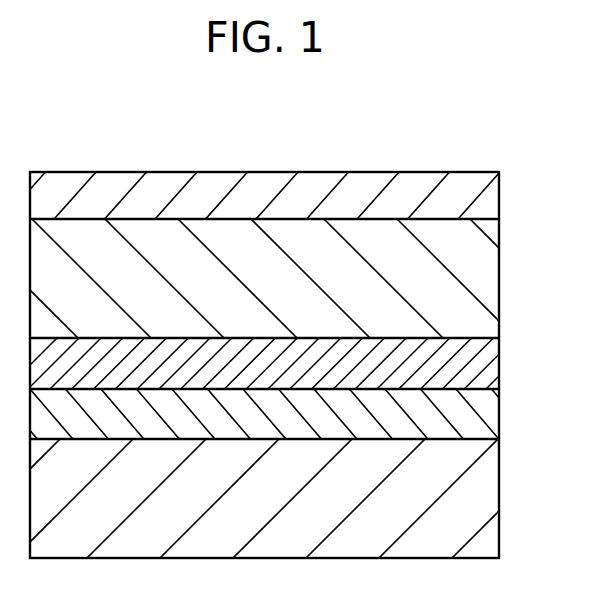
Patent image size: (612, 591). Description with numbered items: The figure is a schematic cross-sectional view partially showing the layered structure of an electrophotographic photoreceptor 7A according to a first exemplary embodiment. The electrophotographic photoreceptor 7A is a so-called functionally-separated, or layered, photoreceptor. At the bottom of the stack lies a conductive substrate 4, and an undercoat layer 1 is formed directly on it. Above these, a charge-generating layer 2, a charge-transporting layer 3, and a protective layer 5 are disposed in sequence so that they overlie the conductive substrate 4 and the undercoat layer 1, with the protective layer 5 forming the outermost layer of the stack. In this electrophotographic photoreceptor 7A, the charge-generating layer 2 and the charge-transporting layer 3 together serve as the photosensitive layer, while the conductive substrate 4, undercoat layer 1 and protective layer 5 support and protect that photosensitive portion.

The electrophotographic photoreceptor 7A is at (496, 129).
The protective layer 5 is at (490, 197).
The charge-transporting layer 3 is at (490, 279).
The charge-generating layer 2 is at (490, 364).
The undercoat layer 1 is at (490, 418).
The conductive substrate 4 is at (490, 502).